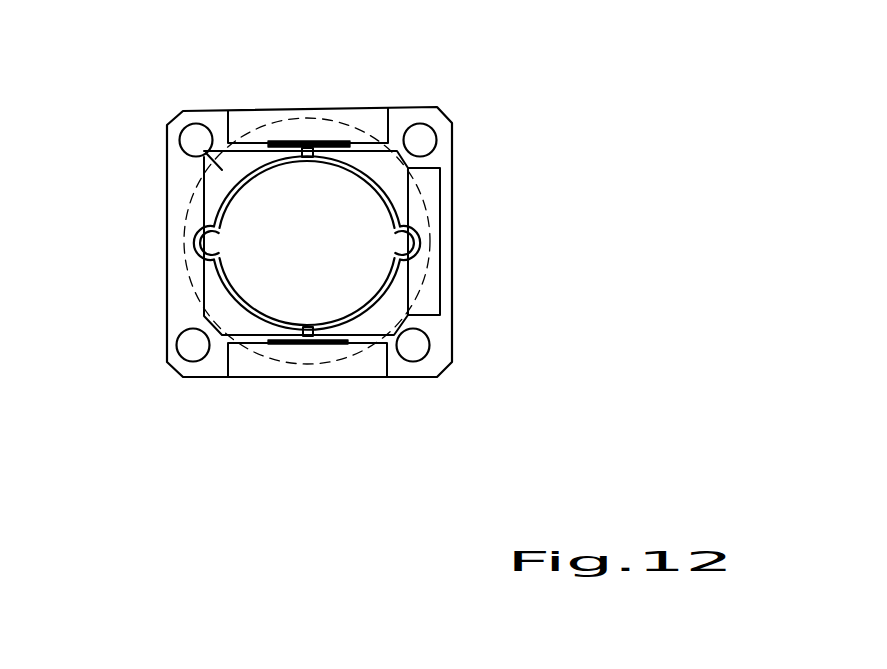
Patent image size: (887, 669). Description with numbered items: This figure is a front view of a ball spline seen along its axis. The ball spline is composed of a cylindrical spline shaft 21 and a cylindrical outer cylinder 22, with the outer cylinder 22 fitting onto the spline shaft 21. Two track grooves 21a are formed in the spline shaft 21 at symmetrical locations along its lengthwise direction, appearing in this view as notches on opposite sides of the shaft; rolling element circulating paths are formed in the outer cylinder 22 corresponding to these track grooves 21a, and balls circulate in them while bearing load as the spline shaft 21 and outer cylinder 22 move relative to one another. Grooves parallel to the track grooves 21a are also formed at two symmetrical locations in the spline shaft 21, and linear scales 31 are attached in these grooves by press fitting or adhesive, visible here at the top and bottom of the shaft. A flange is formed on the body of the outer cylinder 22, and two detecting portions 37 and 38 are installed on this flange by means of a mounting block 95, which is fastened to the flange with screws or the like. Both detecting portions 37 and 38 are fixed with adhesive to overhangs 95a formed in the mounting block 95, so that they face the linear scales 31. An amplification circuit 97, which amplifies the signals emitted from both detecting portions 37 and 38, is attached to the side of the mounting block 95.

The spline shaft 21 is at (373, 213).
The track grooves 21a is at (226, 240).
The outer cylinder 22 is at (183, 281).
The linear scales 31 is at (311, 146).
The detecting portion 37 is at (285, 140).
The detecting portion 38 is at (338, 344).
The mounting block 95 is at (243, 113).
The overhangs 95a is at (370, 113).
The amplification circuit 97 is at (425, 299).